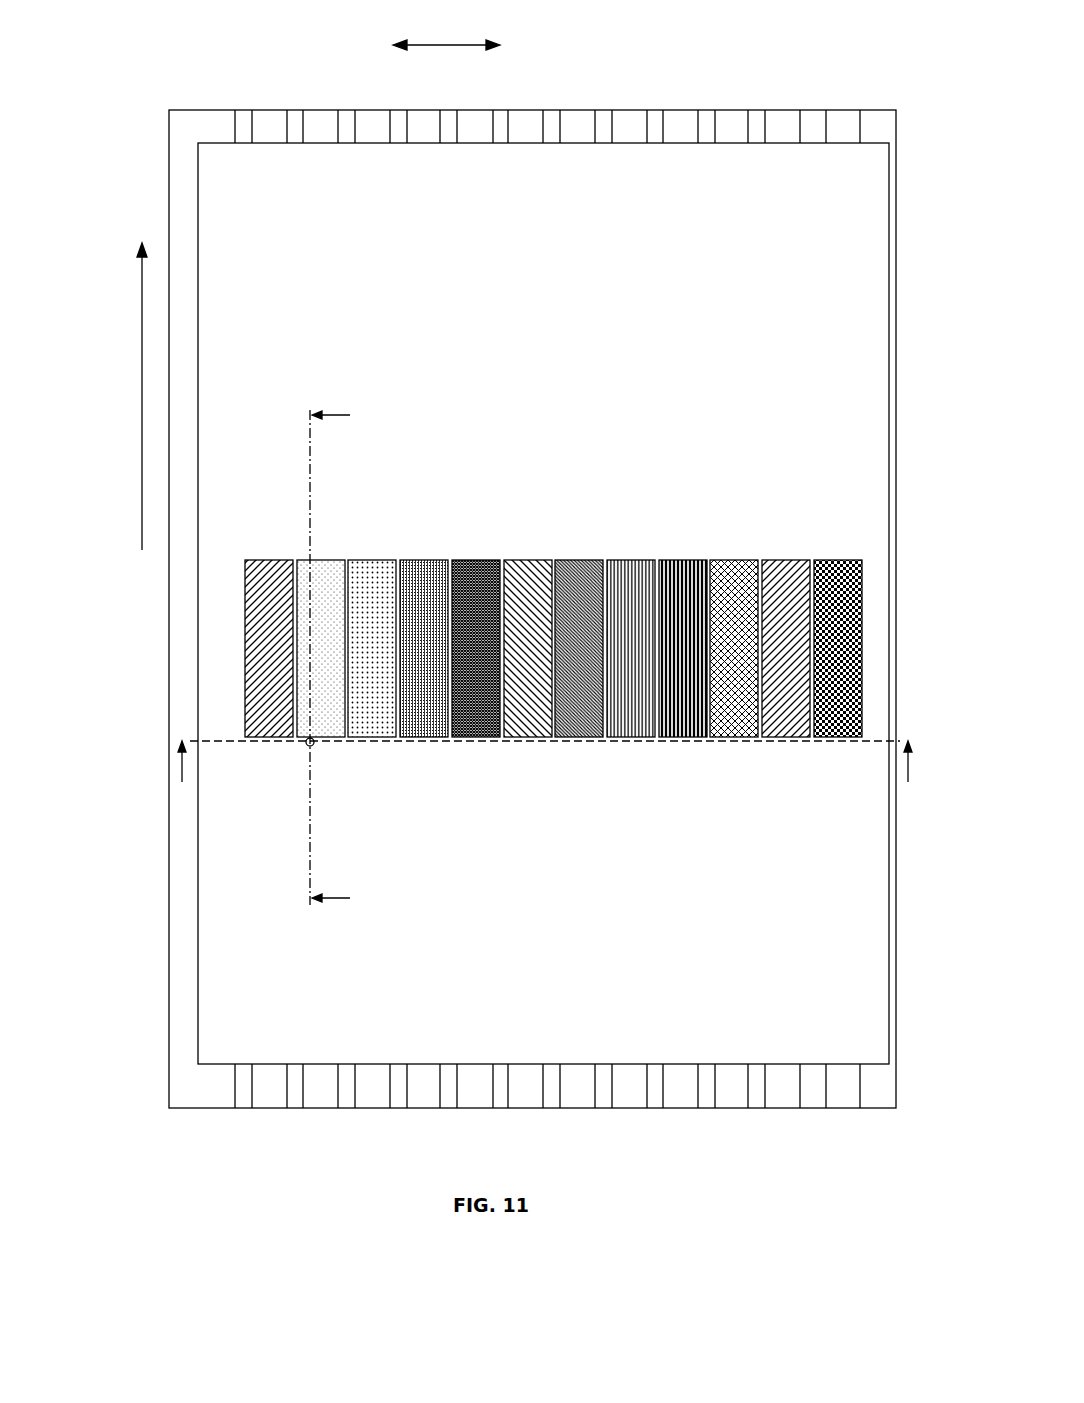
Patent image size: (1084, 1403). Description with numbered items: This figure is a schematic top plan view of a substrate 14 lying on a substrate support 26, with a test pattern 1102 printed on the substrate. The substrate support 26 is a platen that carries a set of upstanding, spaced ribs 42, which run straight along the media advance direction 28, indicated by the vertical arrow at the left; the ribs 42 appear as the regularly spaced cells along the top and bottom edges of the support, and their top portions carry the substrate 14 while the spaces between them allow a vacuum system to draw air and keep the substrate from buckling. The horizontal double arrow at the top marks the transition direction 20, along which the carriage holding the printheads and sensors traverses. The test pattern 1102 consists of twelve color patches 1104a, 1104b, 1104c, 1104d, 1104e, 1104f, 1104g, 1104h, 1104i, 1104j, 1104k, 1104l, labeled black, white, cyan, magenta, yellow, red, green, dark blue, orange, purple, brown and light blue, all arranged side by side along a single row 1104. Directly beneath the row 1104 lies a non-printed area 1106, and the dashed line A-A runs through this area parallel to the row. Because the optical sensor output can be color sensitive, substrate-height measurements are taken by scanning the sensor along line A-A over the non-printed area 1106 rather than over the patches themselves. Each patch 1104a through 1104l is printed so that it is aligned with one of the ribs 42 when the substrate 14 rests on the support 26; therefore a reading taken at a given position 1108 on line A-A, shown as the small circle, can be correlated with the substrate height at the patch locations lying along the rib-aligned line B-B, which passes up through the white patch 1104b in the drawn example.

The substrate 14 is at (876, 932).
The transition direction 20 is at (468, 45).
The substrate support 26 is at (502, 647).
The media advance direction 28 is at (142, 546).
The ribs 42 is at (218, 1102).
The test pattern 1102 is at (476, 334).
The row 1104 is at (242, 568).
The color patch 1104a is at (258, 737).
The color patch 1104b is at (320, 737).
The color patch 1104c is at (362, 730).
The color patch 1104d is at (415, 737).
The color patch 1104e is at (470, 735).
The color patch 1104f is at (520, 737).
The color patch 1104g is at (578, 737).
The color patch 1104h is at (620, 737).
The color patch 1104i is at (672, 735).
The color patch 1104j is at (725, 737).
The color patch 1104k is at (770, 735).
The color patch 1104l is at (840, 737).
The non-printed area 1106 is at (544, 655).
The position 1108 is at (309, 747).